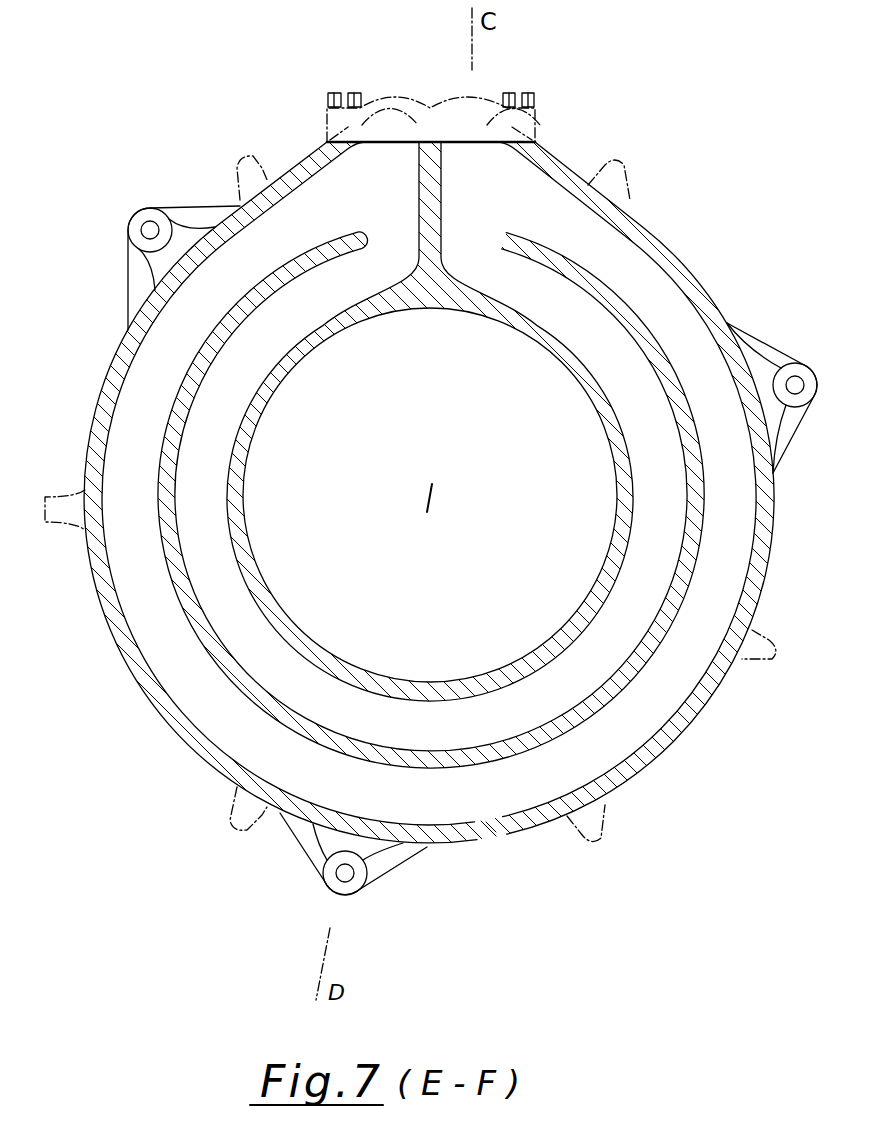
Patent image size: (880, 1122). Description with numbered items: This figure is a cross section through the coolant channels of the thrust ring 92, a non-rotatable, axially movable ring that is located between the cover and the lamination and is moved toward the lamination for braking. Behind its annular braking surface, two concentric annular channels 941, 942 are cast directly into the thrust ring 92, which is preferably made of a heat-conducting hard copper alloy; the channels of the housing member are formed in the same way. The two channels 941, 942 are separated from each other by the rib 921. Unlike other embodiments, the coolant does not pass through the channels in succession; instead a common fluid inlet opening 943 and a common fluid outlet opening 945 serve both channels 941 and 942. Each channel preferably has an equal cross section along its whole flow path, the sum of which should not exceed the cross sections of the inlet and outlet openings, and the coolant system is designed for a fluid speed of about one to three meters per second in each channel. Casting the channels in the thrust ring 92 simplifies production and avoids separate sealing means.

The thrust ring 92 is at (670, 260).
The rib 921 is at (690, 508).
The annular channel 941 is at (267, 658).
The annular channel 942 is at (622, 720).
The fluid inlet opening 943 is at (477, 212).
The fluid outlet opening 945 is at (387, 223).